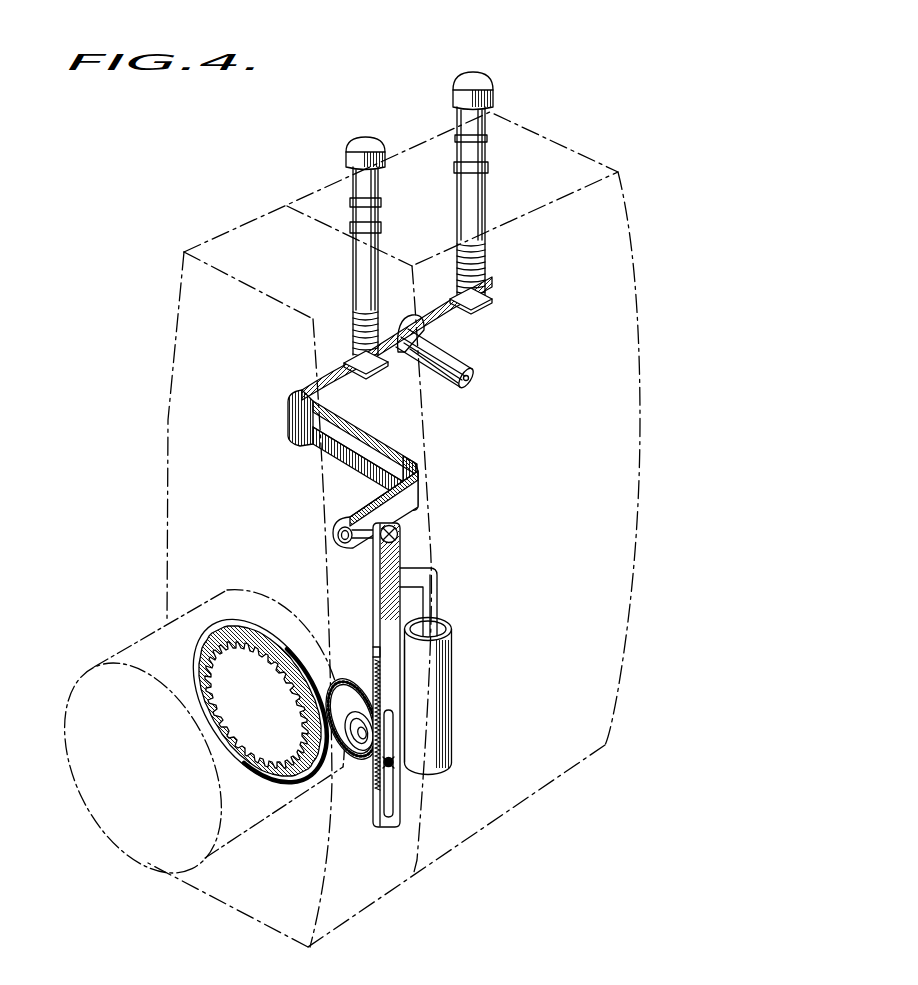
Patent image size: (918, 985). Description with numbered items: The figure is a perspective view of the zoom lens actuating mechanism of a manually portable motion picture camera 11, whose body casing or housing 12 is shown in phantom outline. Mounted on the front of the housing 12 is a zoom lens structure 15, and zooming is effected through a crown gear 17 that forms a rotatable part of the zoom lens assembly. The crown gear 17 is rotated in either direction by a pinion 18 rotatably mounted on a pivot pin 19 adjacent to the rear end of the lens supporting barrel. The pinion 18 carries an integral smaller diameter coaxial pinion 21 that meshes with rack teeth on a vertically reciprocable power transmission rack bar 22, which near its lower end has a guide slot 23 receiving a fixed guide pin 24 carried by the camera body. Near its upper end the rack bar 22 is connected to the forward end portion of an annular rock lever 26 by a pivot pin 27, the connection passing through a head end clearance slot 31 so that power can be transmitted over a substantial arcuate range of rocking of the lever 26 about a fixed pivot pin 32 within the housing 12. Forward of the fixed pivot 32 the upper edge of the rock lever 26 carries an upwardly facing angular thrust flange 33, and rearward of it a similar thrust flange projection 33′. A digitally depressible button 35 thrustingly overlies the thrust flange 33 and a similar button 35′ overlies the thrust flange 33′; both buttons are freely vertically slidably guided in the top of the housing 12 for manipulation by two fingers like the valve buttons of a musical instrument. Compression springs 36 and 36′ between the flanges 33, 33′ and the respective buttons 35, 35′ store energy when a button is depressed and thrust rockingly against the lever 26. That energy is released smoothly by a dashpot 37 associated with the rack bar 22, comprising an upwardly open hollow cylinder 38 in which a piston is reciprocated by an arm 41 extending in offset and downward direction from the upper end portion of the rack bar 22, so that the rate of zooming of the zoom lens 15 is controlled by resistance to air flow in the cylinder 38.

The motion picture camera 11 is at (229, 217).
The body casing or housing 12 is at (515, 812).
The zoom lens structure 15 is at (236, 850).
The crown gear 17 is at (228, 625).
The pinion 18 is at (362, 683).
The pivot pin 19 is at (343, 760).
The coaxial pinion 21 is at (362, 744).
The power transmission rack bar 22 is at (383, 573).
The guide slot 23 is at (388, 800).
The guide pin 24 is at (391, 767).
The rock lever 26 is at (313, 390).
The pivot pin 27 is at (385, 524).
The clearance slot 31 is at (338, 528).
The fixed pivot pin 32 is at (405, 332).
The thrust flange 33 is at (370, 376).
The thrust flange projection 33′ is at (493, 297).
The depressible button 35 is at (363, 138).
The depressible button 35′ is at (472, 78).
The compression spring 36 is at (350, 325).
The compression spring 36′ is at (490, 285).
The dashpot 37 is at (455, 611).
The hollow cylinder 38 is at (455, 682).
The arm 41 is at (432, 570).